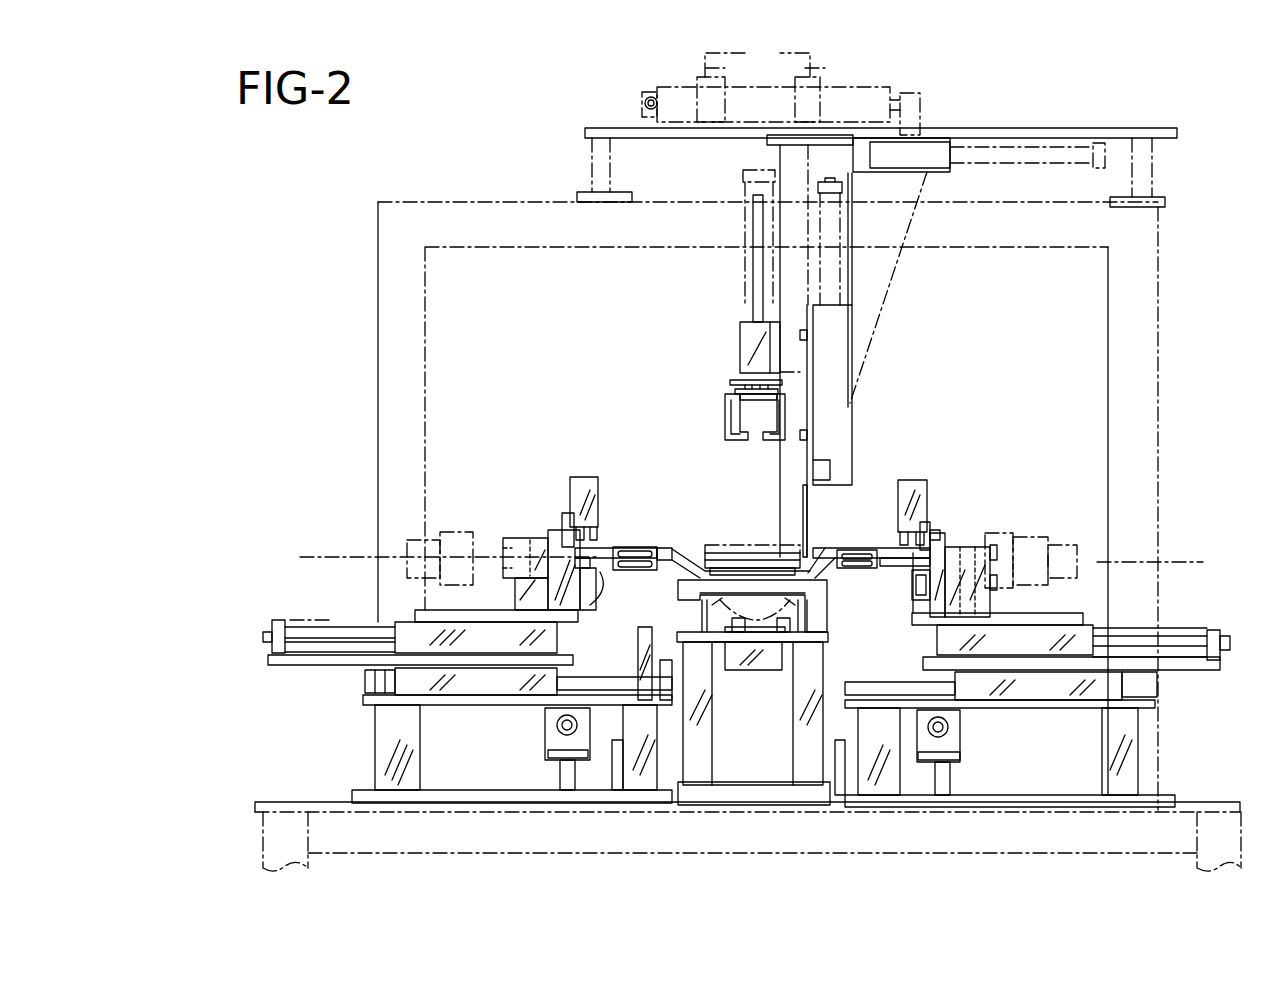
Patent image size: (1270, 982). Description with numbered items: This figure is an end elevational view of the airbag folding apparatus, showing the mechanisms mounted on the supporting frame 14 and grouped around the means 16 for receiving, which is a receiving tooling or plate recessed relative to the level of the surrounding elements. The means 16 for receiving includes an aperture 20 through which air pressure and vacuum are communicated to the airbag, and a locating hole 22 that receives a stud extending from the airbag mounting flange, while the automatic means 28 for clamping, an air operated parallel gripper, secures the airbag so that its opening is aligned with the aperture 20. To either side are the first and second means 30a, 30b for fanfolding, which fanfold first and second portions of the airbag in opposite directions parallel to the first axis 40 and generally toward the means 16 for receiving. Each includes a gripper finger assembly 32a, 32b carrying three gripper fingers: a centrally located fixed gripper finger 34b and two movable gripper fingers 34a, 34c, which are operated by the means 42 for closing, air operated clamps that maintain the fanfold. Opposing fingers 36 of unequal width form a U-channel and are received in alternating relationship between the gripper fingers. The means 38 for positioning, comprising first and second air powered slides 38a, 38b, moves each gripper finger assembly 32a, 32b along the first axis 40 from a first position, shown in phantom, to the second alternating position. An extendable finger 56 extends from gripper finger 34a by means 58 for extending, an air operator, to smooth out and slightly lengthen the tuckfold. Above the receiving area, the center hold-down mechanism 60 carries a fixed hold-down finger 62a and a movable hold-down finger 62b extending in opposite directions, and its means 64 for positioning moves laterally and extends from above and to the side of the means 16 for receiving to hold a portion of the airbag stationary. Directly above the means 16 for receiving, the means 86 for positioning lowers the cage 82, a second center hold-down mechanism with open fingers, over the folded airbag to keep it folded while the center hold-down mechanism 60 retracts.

The supporting frame 14 is at (345, 843).
The means for receiving 16 is at (705, 603).
The aperture 20 is at (760, 548).
The locating hole 22 is at (818, 553).
The automatic means for clamping 28 is at (770, 632).
The first means for fanfolding 30a is at (552, 525).
The second means for fanfolding 30b is at (940, 523).
The first gripper finger assembly 32a is at (618, 543).
The second gripper finger assembly 32b is at (862, 546).
The movable gripper finger 34a is at (636, 546).
The fixed gripper finger 34b is at (616, 574).
The movable gripper finger 34c is at (648, 570).
The opposing finger 36 is at (646, 548).
The means for positioning the gripper finger assembly 38 is at (195, 578).
The first air powered slide 38a is at (405, 627).
The second air powered slide 38b is at (400, 695).
The first axis 40 is at (318, 551).
The means for closing 42 is at (520, 558).
The extendable finger 56 is at (580, 523).
The means for extending 58 is at (568, 478).
The center hold-down mechanism 60 is at (862, 414).
The fixed hold-down finger 62a is at (703, 548).
The movable hold-down finger 62b is at (736, 546).
The means for positioning the center hold-down mechanism 64 is at (858, 320).
The cage 82 is at (722, 415).
The means for positioning the second center hold-down mechanism 86 is at (740, 335).